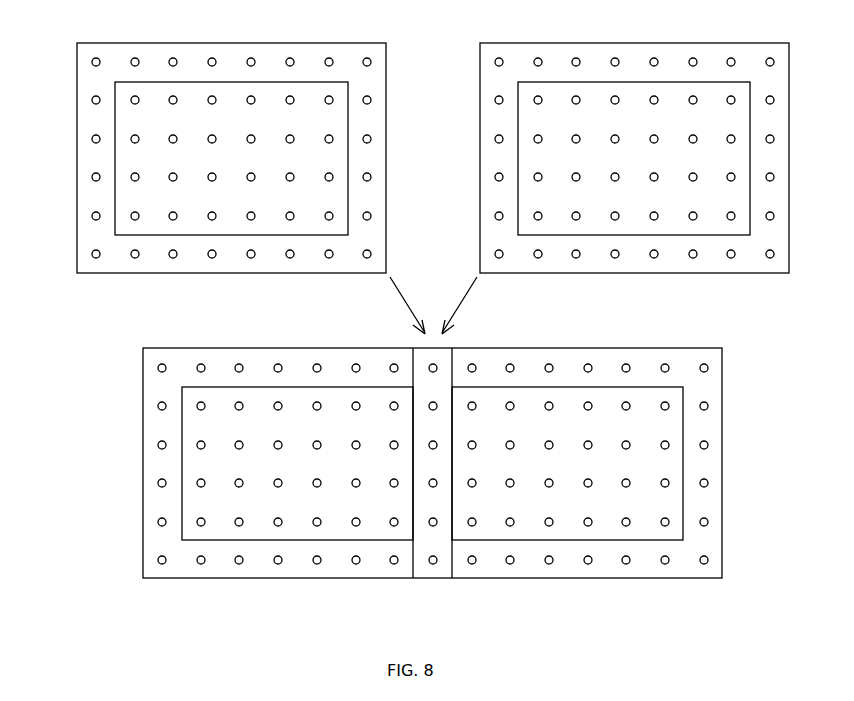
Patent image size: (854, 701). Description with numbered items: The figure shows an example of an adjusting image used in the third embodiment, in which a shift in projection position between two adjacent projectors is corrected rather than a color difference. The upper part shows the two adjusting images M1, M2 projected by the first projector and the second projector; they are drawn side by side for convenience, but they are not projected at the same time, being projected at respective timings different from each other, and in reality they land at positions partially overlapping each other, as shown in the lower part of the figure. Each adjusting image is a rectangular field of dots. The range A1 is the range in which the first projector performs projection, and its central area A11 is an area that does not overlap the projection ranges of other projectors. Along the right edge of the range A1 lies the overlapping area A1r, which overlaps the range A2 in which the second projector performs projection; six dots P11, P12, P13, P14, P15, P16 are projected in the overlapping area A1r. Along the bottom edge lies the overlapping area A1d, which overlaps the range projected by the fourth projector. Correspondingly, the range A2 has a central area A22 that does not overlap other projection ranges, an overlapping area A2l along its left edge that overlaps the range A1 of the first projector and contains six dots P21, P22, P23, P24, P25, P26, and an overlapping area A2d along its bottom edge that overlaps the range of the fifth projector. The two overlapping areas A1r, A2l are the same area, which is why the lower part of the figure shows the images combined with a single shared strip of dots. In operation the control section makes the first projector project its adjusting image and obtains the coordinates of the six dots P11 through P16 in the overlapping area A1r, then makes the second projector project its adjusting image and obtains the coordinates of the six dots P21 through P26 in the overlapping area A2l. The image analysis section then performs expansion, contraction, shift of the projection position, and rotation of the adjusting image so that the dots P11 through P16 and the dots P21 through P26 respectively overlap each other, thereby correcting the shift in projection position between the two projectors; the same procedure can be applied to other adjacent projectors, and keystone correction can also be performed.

The adjusting image M1 is at (367, 323).
The adjusting image M2 is at (632, 300).
The range A1 is at (354, 56).
The range A2 is at (756, 56).
The central area A11 is at (304, 90).
The central area A22 is at (704, 90).
The overlapping area A1d is at (75, 234).
The overlapping area A2d is at (791, 234).
The overlapping area A1r is at (385, 277).
The overlapping area A2l is at (520, 277).
The dot P11 is at (371, 62).
The dot P12 is at (371, 100).
The dot P13 is at (371, 139).
The dot P14 is at (371, 177).
The dot P15 is at (371, 216).
The dot P16 is at (371, 254).
The dot P21 is at (495, 62).
The dot P22 is at (495, 100).
The dot P23 is at (495, 139).
The dot P24 is at (495, 177).
The dot P25 is at (495, 216).
The dot P26 is at (495, 254).